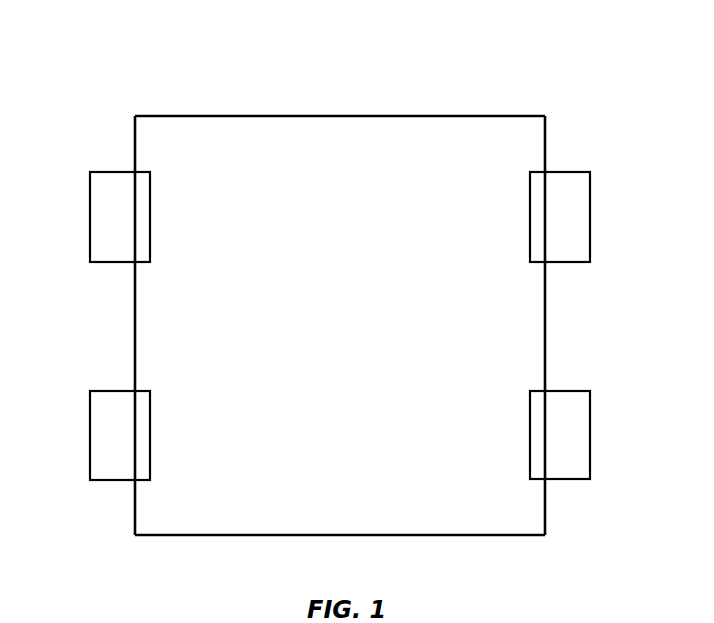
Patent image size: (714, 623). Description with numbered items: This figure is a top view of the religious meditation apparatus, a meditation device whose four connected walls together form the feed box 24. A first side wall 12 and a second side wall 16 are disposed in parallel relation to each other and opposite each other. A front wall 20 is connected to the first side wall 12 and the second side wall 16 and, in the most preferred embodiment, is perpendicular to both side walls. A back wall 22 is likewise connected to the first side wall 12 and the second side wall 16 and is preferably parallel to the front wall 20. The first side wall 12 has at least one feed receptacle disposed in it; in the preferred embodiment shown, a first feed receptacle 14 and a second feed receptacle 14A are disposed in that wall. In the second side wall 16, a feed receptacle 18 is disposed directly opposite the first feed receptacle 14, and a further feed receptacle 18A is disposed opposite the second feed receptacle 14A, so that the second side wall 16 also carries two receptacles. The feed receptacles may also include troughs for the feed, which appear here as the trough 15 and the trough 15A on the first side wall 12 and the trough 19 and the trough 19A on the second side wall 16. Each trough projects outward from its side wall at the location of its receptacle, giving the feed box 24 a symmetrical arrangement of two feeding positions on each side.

The first side wall 12 is at (135, 325).
The first feed receptacle 14 is at (140, 172).
The second feed receptacle 14A is at (140, 391).
The trough 15 is at (90, 218).
The trough 15A is at (90, 437).
The second side wall 16 is at (547, 325).
The feed receptacle 18 is at (540, 172).
The feed receptacle 18A is at (540, 391).
The trough 19 is at (590, 215).
The trough 19A is at (590, 433).
The front wall 20 is at (340, 116).
The back wall 22 is at (342, 535).
The feed box 24 is at (578, 53).